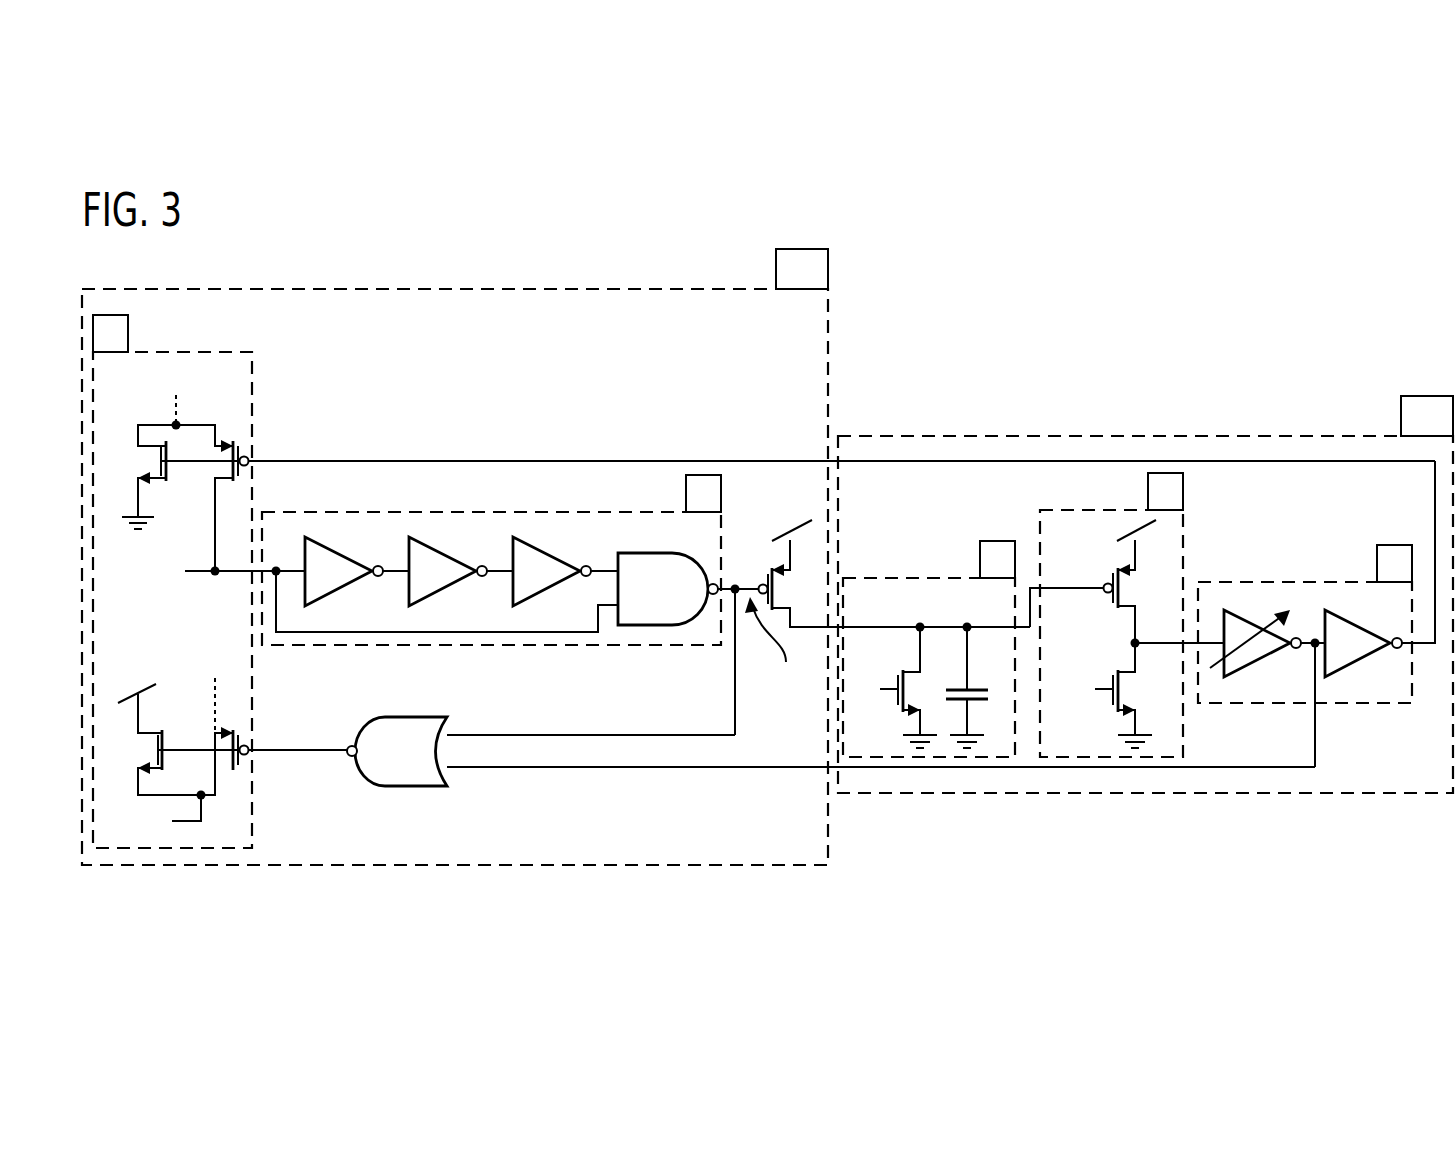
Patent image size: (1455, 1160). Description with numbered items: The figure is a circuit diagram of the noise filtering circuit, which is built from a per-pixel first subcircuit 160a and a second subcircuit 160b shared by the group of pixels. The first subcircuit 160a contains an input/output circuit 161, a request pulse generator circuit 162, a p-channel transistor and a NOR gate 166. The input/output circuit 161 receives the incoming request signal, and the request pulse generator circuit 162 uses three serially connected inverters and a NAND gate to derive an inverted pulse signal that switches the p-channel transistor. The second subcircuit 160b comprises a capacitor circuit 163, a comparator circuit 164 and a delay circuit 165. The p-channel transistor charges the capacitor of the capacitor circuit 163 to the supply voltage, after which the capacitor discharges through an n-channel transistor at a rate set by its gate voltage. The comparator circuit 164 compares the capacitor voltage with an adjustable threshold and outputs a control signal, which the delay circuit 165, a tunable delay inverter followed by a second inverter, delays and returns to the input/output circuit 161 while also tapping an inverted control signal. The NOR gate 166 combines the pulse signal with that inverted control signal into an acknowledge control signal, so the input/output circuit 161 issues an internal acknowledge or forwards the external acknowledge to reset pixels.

The first subcircuit 160a is at (490, 289).
The second subcircuit 160b is at (1110, 436).
The input/output circuit 161 is at (256, 392).
The request pulse generator circuit 162 is at (599, 645).
The capacitor circuit 163 is at (993, 758).
The comparator circuit 164 is at (1120, 758).
The delay circuit 165 is at (1386, 704).
The NOR gate 166 is at (406, 718).